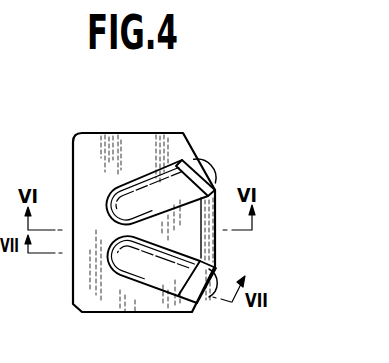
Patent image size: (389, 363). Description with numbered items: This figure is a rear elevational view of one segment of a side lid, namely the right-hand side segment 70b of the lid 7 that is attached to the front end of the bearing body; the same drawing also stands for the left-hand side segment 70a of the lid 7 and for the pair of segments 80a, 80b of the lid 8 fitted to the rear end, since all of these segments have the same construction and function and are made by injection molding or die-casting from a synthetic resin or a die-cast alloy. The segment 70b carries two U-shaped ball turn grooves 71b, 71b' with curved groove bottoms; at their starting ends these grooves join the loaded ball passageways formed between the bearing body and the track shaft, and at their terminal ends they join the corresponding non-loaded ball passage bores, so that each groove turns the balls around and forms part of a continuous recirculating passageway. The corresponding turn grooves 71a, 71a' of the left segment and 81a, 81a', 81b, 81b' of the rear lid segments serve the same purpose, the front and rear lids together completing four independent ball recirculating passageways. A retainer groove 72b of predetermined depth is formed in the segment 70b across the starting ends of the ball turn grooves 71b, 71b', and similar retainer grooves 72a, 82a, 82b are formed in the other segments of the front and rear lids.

The lid 7 is at (144, 187).
The lid 8 is at (137, 131).
The right-hand side segment 70b is at (232, 161).
The left-hand side segment 70a is at (232, 161).
The segment 80a is at (232, 161).
The segment 80b is at (172, 147).
The U-shaped ball turn groove 71b is at (270, 172).
The U-shaped ball turn groove 71a is at (270, 172).
The U-shaped ball turn groove 81a is at (270, 172).
The U-shaped ball turn groove 81b is at (270, 172).
The retainer groove 72b is at (240, 266).
The retainer groove 72a is at (240, 266).
The retainer groove 82a is at (240, 266).
The retainer groove 82b is at (208, 252).
The U-shaped ball turn groove 71b' is at (274, 305).
The U-shaped ball turn groove 71a' is at (274, 305).
The U-shaped ball turn groove 81a' is at (274, 305).
The U-shaped ball turn groove 81b' is at (274, 305).